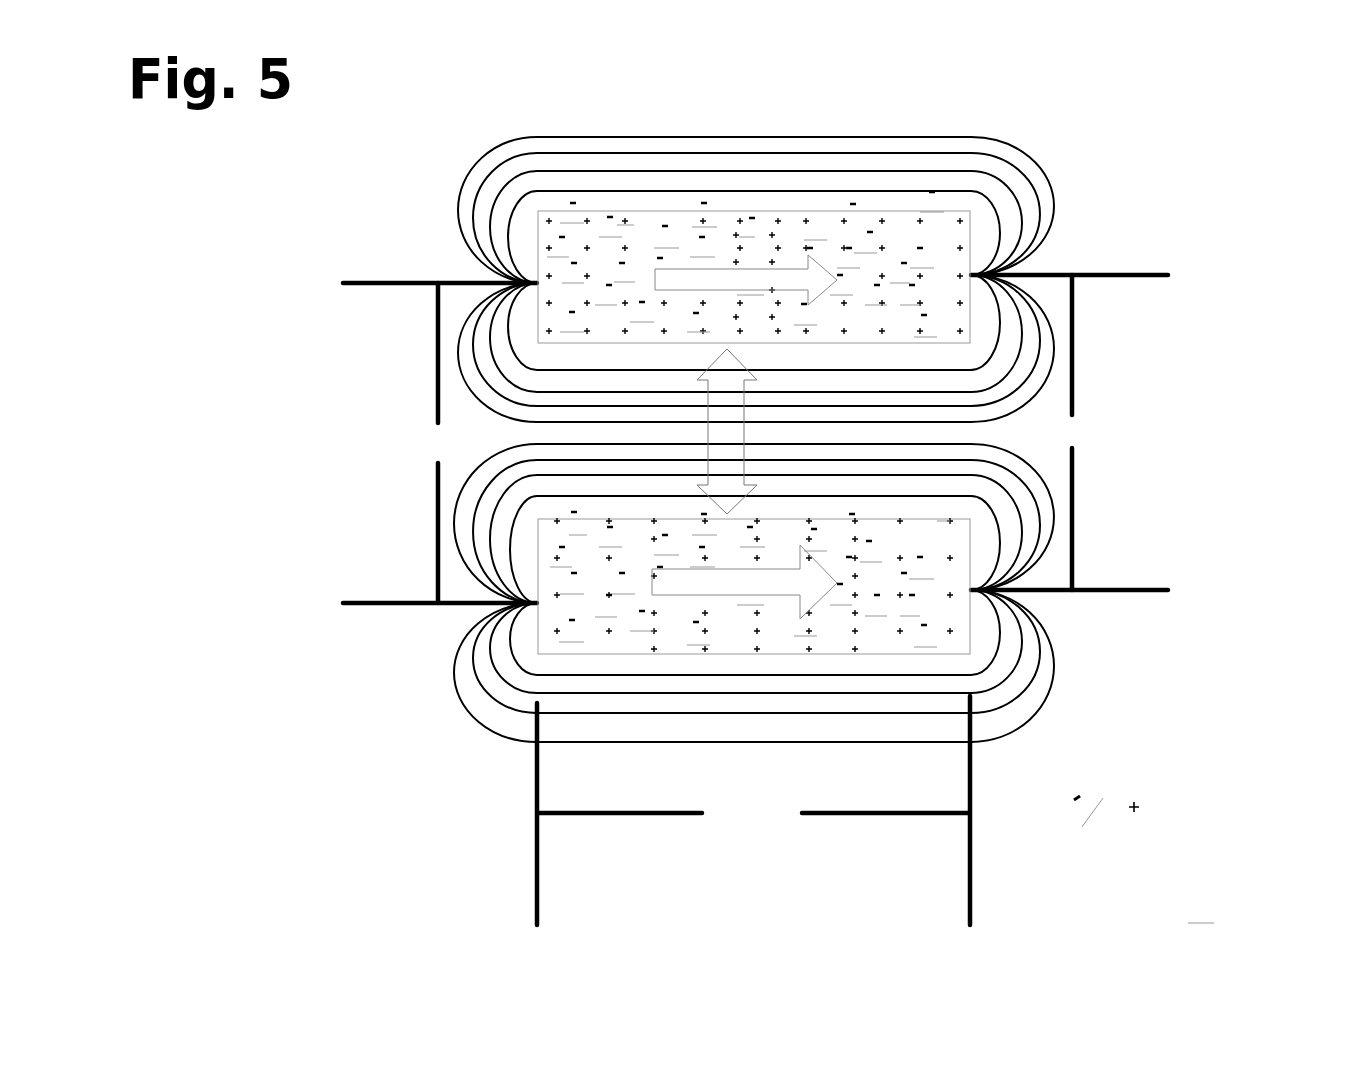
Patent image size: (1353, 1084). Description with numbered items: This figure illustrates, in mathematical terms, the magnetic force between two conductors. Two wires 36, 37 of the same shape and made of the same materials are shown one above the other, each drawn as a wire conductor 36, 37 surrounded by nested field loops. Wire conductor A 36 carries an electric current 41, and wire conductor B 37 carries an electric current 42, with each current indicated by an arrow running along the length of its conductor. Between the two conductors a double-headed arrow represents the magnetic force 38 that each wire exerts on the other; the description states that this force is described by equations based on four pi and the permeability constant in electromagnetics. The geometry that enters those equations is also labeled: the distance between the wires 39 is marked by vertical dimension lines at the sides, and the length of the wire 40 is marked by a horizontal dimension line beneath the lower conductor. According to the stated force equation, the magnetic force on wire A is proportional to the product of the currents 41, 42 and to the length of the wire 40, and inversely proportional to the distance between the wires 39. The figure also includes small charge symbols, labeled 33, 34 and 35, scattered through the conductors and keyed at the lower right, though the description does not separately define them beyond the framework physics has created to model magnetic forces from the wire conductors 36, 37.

The negative charge 33 is at (1208, 863).
The positive charge 34 is at (1153, 805).
The negative charge symbol 35 is at (1072, 815).
The wire conductor A 36 is at (813, 225).
The wire conductor B 37 is at (802, 635).
The magnetic force 38 is at (727, 431).
The distance between wires 39 is at (766, 439).
The length of wire 40 is at (753, 810).
The current in wire A 41 is at (746, 280).
The current in wire B 42 is at (744, 582).